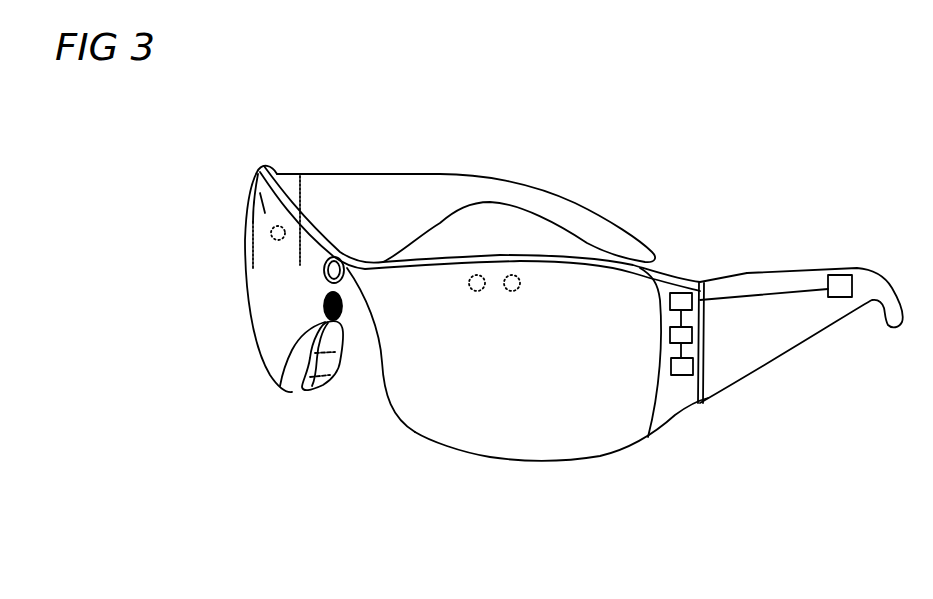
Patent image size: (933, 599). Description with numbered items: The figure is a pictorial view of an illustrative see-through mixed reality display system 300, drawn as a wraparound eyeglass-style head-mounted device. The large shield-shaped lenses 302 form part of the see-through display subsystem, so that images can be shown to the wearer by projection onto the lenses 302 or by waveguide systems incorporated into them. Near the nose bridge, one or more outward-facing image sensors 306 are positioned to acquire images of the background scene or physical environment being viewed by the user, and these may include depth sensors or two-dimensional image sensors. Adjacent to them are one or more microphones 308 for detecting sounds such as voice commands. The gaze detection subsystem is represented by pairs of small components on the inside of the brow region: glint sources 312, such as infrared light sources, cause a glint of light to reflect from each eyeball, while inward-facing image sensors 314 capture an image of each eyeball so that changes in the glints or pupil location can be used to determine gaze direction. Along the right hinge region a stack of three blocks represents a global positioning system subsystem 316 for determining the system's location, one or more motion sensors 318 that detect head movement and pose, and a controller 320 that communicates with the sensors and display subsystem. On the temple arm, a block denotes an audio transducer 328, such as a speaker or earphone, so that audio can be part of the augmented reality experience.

The see-through mixed reality display system 300 is at (539, 116).
The lens 302 is at (570, 432).
The outward-facing image sensor 306 is at (382, 410).
The microphone 308 is at (288, 384).
The glint source 312 is at (295, 254).
The image sensor 314 is at (278, 227).
The global positioning system (GPS) subsystem 316 is at (670, 332).
The motion sensor 318 is at (671, 365).
The controller 320 is at (670, 299).
The audio transducer 328 is at (832, 275).